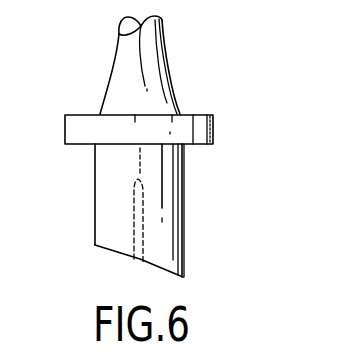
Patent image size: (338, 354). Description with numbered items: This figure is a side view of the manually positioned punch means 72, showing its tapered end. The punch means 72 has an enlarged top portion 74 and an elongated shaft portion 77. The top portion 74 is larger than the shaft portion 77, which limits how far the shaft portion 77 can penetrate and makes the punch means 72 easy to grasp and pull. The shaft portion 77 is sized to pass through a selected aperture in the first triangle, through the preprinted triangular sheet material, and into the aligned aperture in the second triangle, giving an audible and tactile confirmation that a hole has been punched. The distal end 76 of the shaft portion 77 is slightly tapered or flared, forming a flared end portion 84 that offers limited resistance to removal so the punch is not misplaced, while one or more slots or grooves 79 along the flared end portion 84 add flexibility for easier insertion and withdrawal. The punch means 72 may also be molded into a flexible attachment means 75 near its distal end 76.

The punch means 72 is at (233, 131).
The top portion 74 is at (193, 115).
The flexible attachment means 75 is at (161, 37).
The distal end 76 is at (110, 80).
The shaft portion 77 is at (184, 210).
The slots or grooves 79 is at (133, 218).
The flared end portion 84 is at (183, 277).